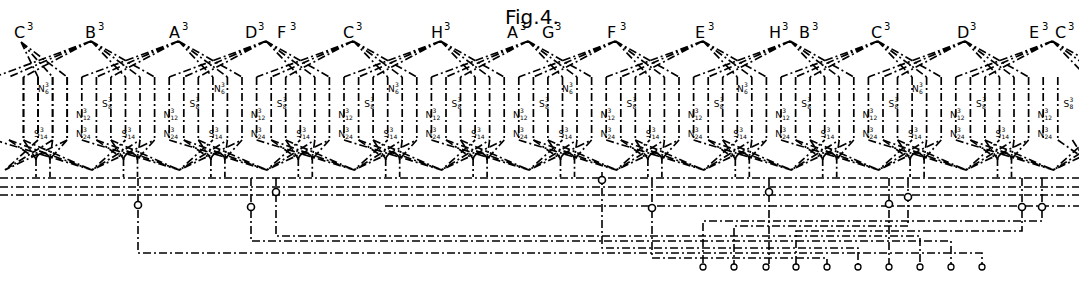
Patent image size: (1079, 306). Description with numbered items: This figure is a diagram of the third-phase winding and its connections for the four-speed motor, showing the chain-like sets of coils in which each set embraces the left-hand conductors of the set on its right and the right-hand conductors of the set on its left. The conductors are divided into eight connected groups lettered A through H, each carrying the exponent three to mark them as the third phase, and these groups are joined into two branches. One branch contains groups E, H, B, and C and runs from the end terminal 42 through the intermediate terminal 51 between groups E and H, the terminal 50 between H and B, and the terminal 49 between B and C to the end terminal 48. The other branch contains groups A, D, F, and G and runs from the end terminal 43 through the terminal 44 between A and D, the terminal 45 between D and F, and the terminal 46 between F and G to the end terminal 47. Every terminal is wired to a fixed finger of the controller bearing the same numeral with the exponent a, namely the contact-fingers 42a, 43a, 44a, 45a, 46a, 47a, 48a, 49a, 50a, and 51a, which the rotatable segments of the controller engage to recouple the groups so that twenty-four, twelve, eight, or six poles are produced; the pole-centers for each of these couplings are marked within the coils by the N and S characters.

The terminal 42 is at (884, 221).
The terminal 43 is at (559, 221).
The terminal 44 is at (881, 221).
The terminal 45 is at (600, 221).
The terminal 46 is at (729, 218).
The terminal 47 is at (823, 221).
The terminal 48 is at (911, 221).
The terminal 49 is at (738, 221).
The terminal 50 is at (597, 221).
The terminal 51 is at (779, 221).
The contact-finger 42a is at (693, 267).
The contact-finger 43a is at (756, 267).
The contact-finger 44a is at (879, 267).
The contact-finger 45a is at (848, 267).
The contact-finger 46a is at (972, 267).
The contact-finger 47a is at (724, 267).
The contact-finger 48a is at (786, 267).
The contact-finger 49a is at (817, 267).
The contact-finger 50a is at (941, 267).
The contact-finger 51a is at (910, 267).